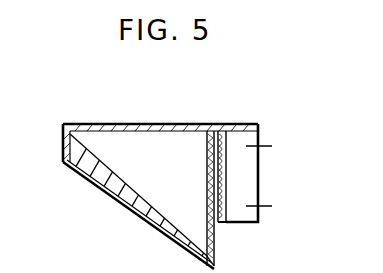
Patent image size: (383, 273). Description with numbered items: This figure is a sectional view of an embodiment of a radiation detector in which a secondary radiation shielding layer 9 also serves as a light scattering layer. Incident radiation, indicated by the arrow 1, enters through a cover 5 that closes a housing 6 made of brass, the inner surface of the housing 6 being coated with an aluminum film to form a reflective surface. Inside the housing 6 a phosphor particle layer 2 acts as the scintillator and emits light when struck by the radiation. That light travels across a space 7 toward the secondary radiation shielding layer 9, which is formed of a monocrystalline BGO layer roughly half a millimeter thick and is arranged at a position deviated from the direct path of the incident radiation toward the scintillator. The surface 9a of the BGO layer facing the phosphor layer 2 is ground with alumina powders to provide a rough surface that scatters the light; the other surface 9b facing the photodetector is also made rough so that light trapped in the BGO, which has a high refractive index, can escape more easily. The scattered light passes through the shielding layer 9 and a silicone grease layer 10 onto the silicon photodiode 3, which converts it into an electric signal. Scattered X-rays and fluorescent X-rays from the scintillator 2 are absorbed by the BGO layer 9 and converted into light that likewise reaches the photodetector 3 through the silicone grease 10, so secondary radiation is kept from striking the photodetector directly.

The direction of incident light / force 1 is at (142, 124).
The phosphor particle layer 2 is at (143, 200).
The silicon photodiode 3 is at (256, 174).
The cover 5 is at (160, 124).
The housing 6 is at (98, 187).
The space 7 is at (123, 146).
The secondary radiation shielding layer 9 is at (212, 224).
The surface facing the phosphor layer 9a is at (210, 140).
The surface facing the photodetector 9b is at (228, 129).
The silicone grease 10 is at (222, 224).